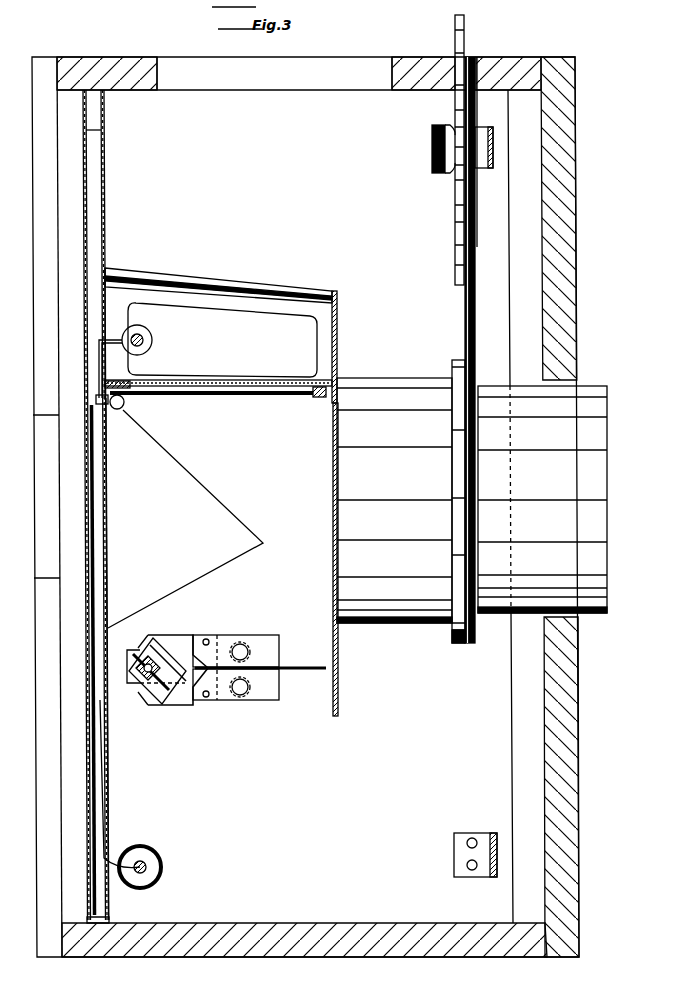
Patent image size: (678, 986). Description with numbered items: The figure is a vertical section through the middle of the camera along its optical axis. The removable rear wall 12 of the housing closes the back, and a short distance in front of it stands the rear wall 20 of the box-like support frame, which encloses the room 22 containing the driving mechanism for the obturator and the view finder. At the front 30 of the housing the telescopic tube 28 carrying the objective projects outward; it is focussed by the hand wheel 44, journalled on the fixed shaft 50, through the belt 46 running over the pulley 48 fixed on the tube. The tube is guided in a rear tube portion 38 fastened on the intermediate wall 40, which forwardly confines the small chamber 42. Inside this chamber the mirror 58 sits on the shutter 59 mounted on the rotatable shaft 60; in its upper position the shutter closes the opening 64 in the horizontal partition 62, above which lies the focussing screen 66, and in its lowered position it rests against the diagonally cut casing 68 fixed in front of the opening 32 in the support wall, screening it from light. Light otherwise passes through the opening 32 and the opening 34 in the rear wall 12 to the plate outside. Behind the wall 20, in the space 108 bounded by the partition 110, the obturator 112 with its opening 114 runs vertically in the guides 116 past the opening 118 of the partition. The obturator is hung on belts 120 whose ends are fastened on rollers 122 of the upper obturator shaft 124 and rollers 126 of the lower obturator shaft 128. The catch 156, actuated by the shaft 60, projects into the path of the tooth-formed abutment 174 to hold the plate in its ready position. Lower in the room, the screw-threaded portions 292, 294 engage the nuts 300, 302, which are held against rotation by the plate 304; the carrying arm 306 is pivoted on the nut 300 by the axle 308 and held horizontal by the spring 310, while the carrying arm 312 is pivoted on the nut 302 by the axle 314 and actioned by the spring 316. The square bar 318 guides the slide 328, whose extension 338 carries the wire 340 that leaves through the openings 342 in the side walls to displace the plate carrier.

The rear wall 12 is at (40, 313).
The rear wall of the support 20 is at (110, 735).
The room 22 is at (454, 779).
The telescopic tube 28 is at (604, 437).
The front 30 is at (566, 210).
The opening 32 is at (109, 455).
The opening 34 is at (45, 505).
The conduit inner portion 38 is at (378, 630).
The intermediate wall 40 is at (340, 673).
The chamber 42 is at (292, 552).
The hand wheel 44 is at (465, 30).
The belt 46 is at (466, 315).
The pulley 48 is at (477, 370).
The fixed shaft 50 is at (494, 145).
The mirror 58 is at (228, 397).
The shutter 59 is at (320, 399).
The rotatable shaft 60 is at (126, 405).
The horizontal partition 62 is at (113, 380).
The opening 64 is at (182, 380).
The focussing screen 66 is at (232, 285).
The casing 68 is at (235, 562).
The space 108 is at (90, 313).
The partition 110 is at (89, 748).
The obturator 112 is at (95, 727).
The opening 114 is at (94, 672).
The guides 116 is at (91, 433).
The opening 118 is at (92, 585).
The belts 120 is at (98, 387).
The rollers 122 is at (147, 331).
The upper obturator shaft 124 is at (144, 340).
The rollers 126 is at (140, 884).
The lower obturator shaft 128 is at (148, 862).
The catch 156 is at (96, 403).
The tooth-formed abutment 174 is at (88, 701).
The screw-threaded portion 292 is at (250, 697).
The screw-threaded portion 294 is at (249, 645).
The nut 300 is at (281, 685).
The nut 302 is at (281, 640).
The plate 304 is at (305, 666).
The carrying arm 306 is at (160, 705).
The axle 308 is at (210, 697).
The spring 310 is at (190, 707).
The carrying arm 312 is at (180, 634).
The axle 314 is at (210, 640).
The spring 316 is at (206, 634).
The bar 318 is at (166, 667).
The slide 328 is at (140, 702).
The extension 338 is at (147, 634).
The wire 340 is at (137, 651).
The openings 342 is at (140, 689).